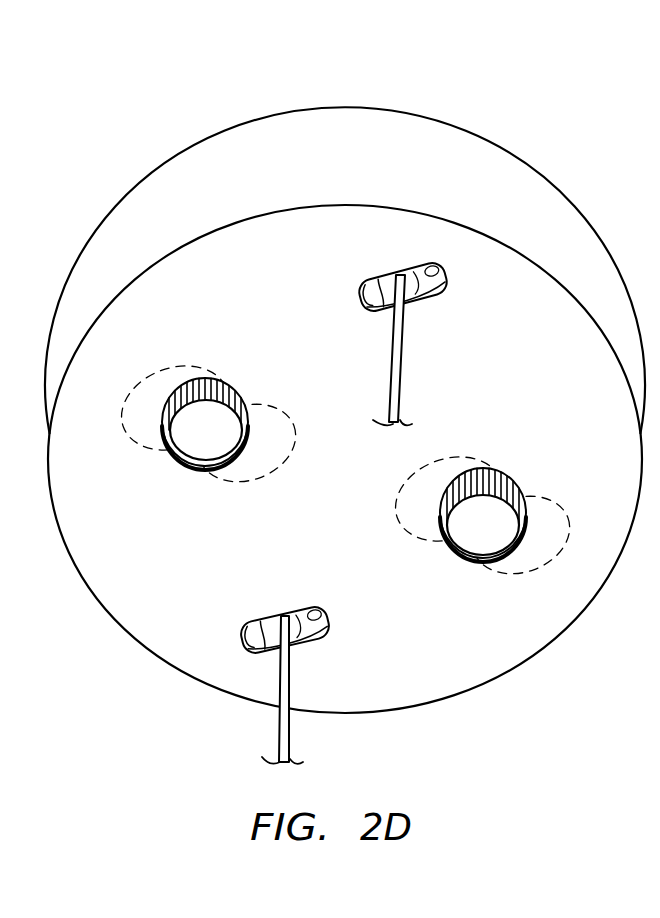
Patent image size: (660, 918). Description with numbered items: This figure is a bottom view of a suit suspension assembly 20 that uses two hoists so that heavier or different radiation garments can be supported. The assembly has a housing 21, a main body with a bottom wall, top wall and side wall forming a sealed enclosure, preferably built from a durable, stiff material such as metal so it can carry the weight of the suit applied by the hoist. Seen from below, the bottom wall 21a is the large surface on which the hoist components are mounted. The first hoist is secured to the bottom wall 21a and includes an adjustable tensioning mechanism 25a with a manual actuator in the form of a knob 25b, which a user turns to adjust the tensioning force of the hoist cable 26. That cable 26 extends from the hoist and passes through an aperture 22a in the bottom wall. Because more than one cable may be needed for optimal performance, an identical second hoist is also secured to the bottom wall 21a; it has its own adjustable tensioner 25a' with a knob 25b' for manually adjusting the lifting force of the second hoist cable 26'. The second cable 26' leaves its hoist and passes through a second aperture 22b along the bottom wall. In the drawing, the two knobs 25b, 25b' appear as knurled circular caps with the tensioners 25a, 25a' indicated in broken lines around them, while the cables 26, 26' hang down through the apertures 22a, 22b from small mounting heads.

The suit suspension assembly 20 is at (131, 115).
The housing 21 is at (492, 151).
The bottom wall 21a is at (598, 420).
The aperture 22a is at (256, 640).
The second aperture 22b is at (362, 299).
The adjustable tensioning mechanism 25a is at (482, 548).
The adjustable tensioner 25a' is at (208, 457).
The knob 25b is at (523, 503).
The knob 25b' is at (248, 410).
The hoist cable 26 is at (243, 690).
The second hoist cable 26' is at (435, 350).